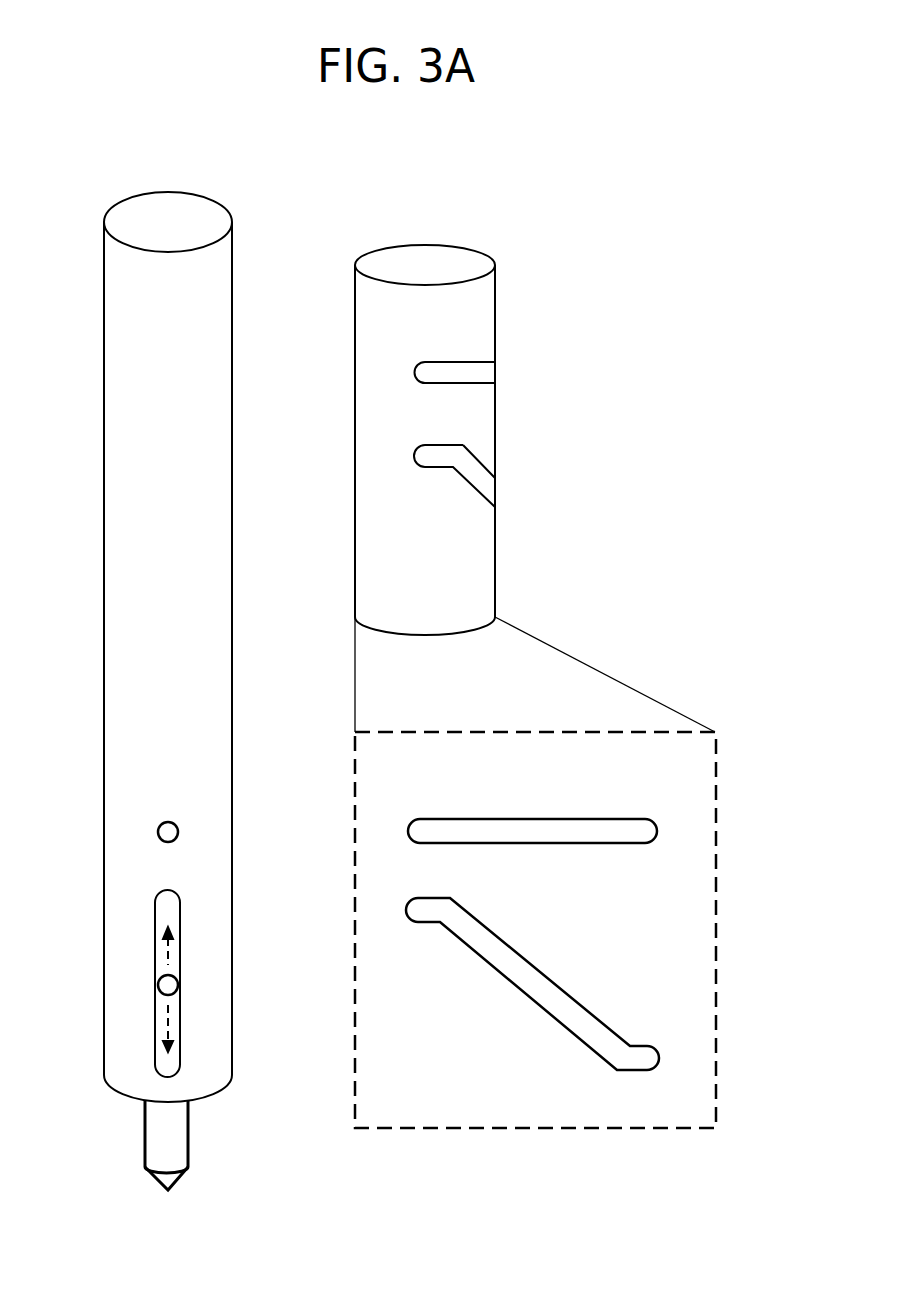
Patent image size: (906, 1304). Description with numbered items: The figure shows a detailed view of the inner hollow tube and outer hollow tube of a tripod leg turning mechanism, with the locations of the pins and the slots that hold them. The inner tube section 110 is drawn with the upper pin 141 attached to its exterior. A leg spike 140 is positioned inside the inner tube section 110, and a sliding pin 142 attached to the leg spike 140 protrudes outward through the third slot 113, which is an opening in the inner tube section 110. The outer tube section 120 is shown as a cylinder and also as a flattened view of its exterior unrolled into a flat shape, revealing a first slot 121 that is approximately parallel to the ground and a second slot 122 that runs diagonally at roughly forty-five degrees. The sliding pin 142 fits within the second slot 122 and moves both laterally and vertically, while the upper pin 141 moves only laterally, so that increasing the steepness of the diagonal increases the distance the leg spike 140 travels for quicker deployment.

The inner tube section 110 is at (188, 327).
The third slot 113 is at (165, 903).
The outer tube section 120 is at (443, 312).
The first slot 121 is at (488, 368).
The second slot 122 is at (483, 487).
The leg spike 140 is at (177, 1153).
The upper pin 141 is at (160, 823).
The sliding pin 142 is at (166, 984).